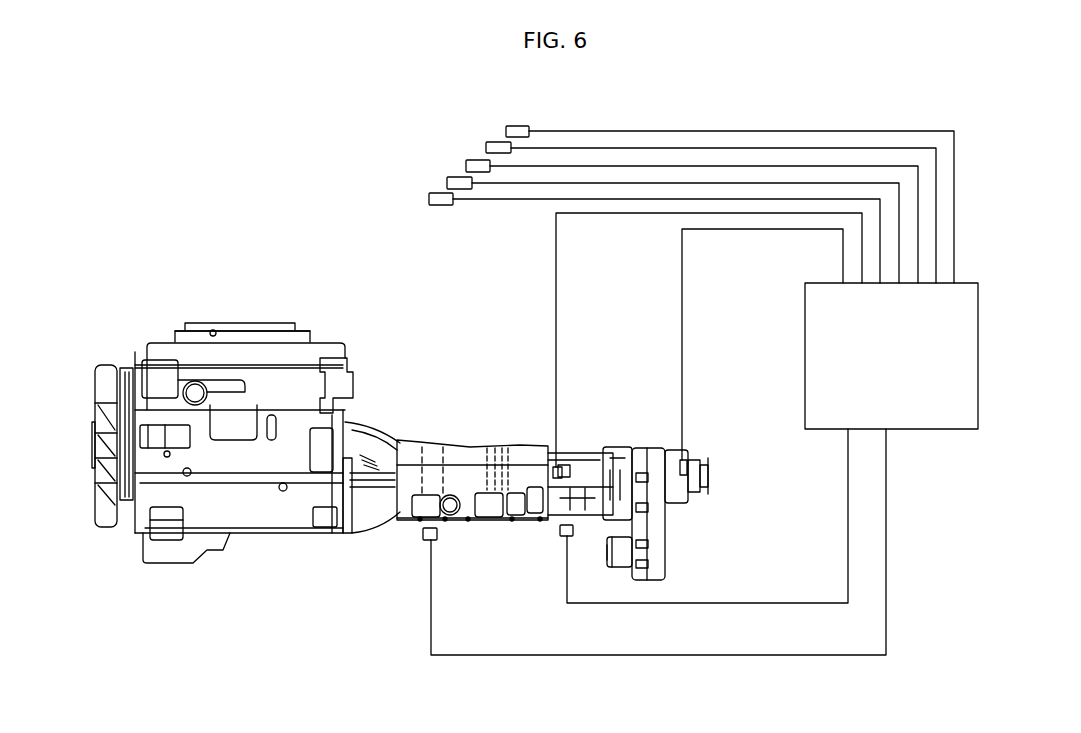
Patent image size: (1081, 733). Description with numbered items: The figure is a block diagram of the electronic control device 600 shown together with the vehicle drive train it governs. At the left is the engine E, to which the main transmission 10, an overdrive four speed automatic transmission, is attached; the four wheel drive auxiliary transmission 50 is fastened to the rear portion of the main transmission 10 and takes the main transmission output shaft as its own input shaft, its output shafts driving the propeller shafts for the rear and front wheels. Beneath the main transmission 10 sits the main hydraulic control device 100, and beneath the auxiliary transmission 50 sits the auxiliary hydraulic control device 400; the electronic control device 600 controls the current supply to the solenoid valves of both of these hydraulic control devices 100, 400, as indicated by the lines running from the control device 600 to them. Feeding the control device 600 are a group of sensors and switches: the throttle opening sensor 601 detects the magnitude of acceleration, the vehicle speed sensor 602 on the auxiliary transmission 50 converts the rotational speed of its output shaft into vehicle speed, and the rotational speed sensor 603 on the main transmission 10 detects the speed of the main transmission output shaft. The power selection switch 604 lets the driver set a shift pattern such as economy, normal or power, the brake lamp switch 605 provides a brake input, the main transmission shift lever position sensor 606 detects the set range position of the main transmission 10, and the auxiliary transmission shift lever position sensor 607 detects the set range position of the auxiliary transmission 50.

The engine E is at (218, 313).
The main transmission 10 is at (420, 413).
The four wheel drive auxiliary transmission 50 is at (608, 416).
The main hydraulic control device 100 is at (422, 532).
The auxiliary hydraulic control device 400 is at (555, 522).
The electronic control device 600 is at (987, 279).
The throttle opening sensor 601 is at (506, 131).
The vehicle speed sensor 602 is at (688, 458).
The rotational speed sensor of the main transmission output shaft 603 is at (550, 470).
The power selection switch 604 is at (486, 148).
The brake lamp switch 605 is at (466, 166).
The main transmission shift lever position sensor 606 is at (447, 183).
The auxiliary transmission shift lever position sensor 607 is at (429, 199).